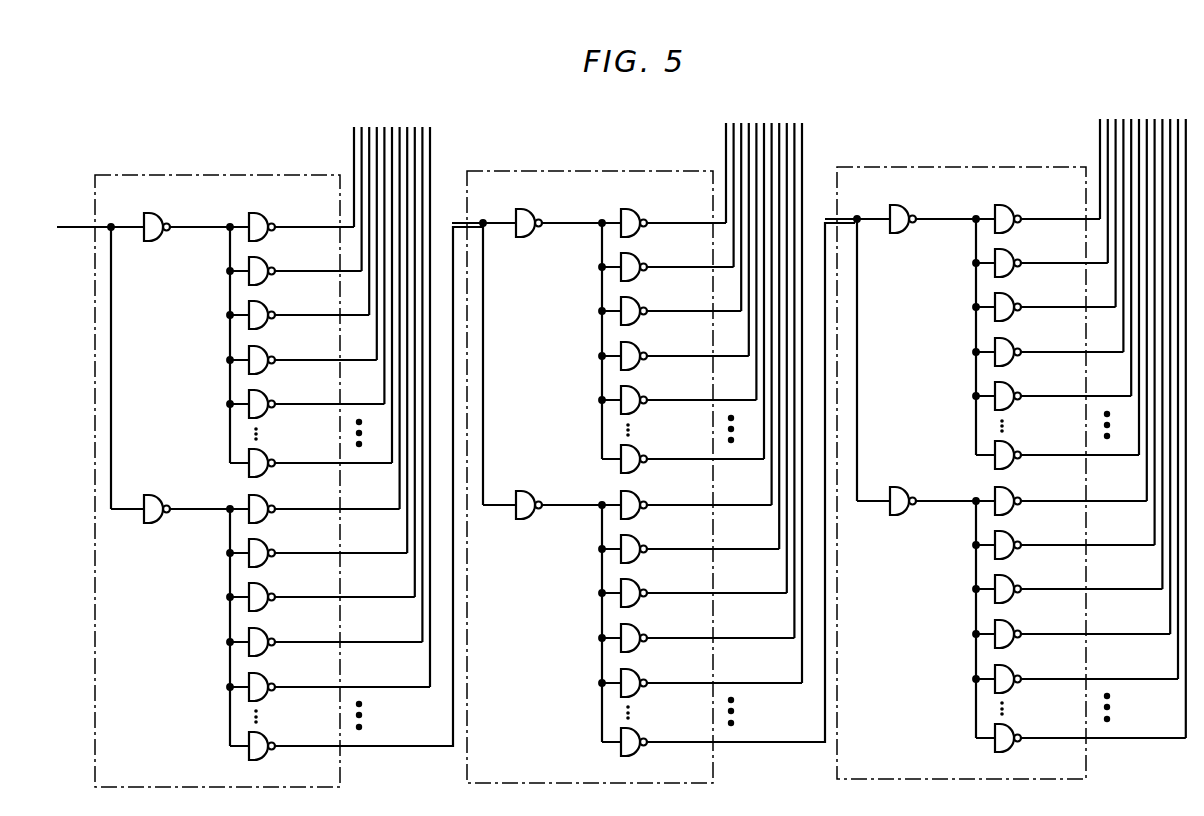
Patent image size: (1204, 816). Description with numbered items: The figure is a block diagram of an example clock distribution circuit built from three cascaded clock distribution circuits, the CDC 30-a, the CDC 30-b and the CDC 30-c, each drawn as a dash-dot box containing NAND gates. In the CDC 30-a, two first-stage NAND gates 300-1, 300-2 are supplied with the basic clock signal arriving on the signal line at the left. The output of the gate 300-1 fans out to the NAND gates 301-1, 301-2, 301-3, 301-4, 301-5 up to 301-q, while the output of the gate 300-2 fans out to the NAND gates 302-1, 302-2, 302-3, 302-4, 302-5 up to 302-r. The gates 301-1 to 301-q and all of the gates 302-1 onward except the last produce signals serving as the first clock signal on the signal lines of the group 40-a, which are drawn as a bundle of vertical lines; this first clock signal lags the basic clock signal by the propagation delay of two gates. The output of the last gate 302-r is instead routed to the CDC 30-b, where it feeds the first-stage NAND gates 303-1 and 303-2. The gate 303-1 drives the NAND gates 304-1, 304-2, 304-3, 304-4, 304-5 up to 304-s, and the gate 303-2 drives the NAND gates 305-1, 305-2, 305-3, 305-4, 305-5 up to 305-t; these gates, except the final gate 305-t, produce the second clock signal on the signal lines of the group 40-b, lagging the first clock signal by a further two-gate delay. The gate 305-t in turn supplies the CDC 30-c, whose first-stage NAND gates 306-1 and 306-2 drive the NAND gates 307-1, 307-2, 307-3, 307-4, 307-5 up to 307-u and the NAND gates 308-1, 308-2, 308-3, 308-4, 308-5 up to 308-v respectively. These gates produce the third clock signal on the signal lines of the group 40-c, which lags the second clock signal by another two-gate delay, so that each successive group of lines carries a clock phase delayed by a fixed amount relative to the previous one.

The CDC 30-a is at (230, 175).
The CDC 30-b is at (590, 458).
The CDC 30-c is at (961, 454).
The signal line group 40-a is at (430, 120).
The signal line group 40-b is at (764, 383).
The signal line group 40-c is at (1143, 408).
The NAND gate 300-1 is at (157, 215).
The NAND gate 300-2 is at (157, 497).
The NAND gate 301-1 is at (262, 215).
The NAND gate 301-2 is at (262, 259).
The NAND gate 301-3 is at (262, 303).
The NAND gate 301-4 is at (262, 348).
The NAND gate 301-5 is at (262, 392).
The NAND gate 301-q is at (262, 451).
The NAND gate 302-1 is at (262, 497).
The NAND gate 302-2 is at (262, 541).
The NAND gate 302-3 is at (262, 585).
The NAND gate 302-4 is at (262, 630).
The NAND gate 302-5 is at (262, 675).
The NAND gate 302-r is at (262, 734).
The NAND gate 303-1 is at (527, 350).
The NAND gate 303-2 is at (542, 610).
The NAND gate 304-1 is at (662, 216).
The NAND gate 304-2 is at (666, 260).
The NAND gate 304-3 is at (670, 304).
The NAND gate 304-4 is at (674, 349).
The NAND gate 304-5 is at (677, 393).
The NAND gate 304-s is at (683, 452).
The NAND gate 305-1 is at (685, 498).
The NAND gate 305-2 is at (689, 542).
The NAND gate 305-3 is at (693, 586).
The NAND gate 305-4 is at (696, 631).
The NAND gate 305-5 is at (700, 676).
The NAND gate 305-t is at (728, 489).
The NAND gate 306-1 is at (900, 346).
The NAND gate 306-2 is at (916, 606).
The NAND gate 307-1 is at (1036, 212).
The NAND gate 307-2 is at (1040, 256).
The NAND gate 307-3 is at (1044, 300).
The NAND gate 307-4 is at (1048, 345).
The NAND gate 307-5 is at (1052, 389).
The NAND gate 307-u is at (1057, 448).
The NAND gate 308-1 is at (1060, 494).
The NAND gate 308-2 is at (1063, 538).
The NAND gate 308-3 is at (1067, 582).
The NAND gate 308-4 is at (1071, 627).
The NAND gate 308-5 is at (1075, 672).
The NAND gate 308-v is at (1081, 731).